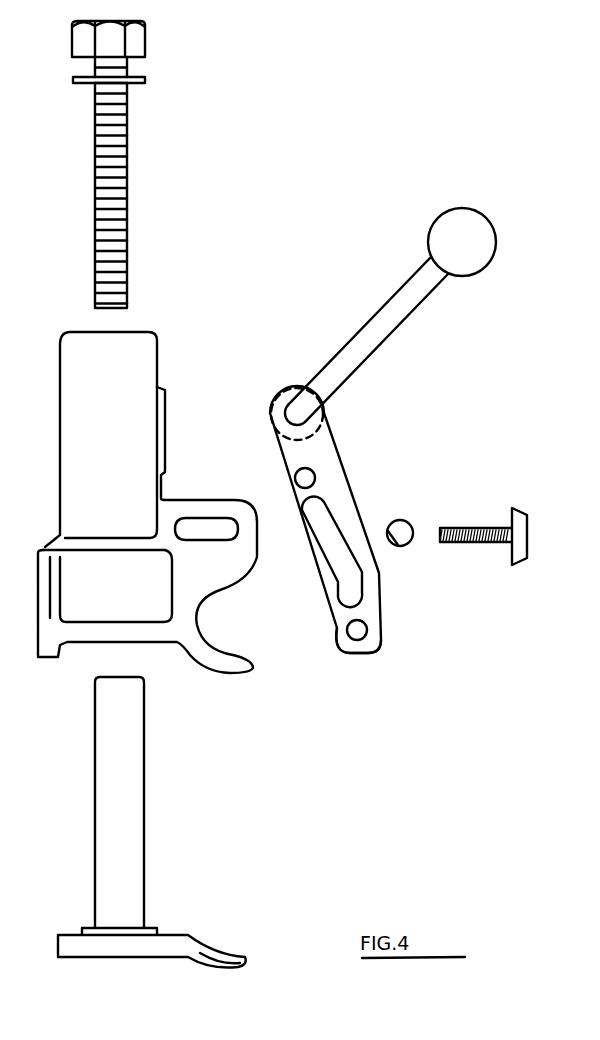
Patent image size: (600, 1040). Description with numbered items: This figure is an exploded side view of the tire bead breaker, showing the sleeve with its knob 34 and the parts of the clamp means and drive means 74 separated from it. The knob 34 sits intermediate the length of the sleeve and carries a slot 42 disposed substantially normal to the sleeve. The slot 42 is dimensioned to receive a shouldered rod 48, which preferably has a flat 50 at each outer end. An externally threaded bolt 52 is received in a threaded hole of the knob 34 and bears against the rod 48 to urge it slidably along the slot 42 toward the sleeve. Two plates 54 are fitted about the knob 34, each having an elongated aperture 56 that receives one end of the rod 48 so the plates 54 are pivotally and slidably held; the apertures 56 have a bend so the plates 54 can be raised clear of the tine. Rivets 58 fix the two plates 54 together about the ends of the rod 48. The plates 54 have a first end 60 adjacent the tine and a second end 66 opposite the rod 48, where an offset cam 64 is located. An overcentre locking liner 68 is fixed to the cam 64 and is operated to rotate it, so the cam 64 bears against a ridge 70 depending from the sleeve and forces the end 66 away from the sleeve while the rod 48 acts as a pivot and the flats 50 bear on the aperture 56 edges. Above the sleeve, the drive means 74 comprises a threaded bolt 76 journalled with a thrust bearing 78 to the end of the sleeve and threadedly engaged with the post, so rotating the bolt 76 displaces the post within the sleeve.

The knob 34 is at (192, 510).
The slot 42 is at (217, 538).
The shouldered rod 48 is at (402, 518).
The flat 50 is at (392, 547).
The externally threaded bolt 52 is at (523, 510).
The plate 54 is at (362, 466).
The elongated aperture 56 is at (333, 552).
The rivet 58 is at (305, 478).
The first end 60 is at (370, 656).
The offset cam 64 is at (322, 413).
The second end 66 is at (302, 393).
The overcentre locking liner 68 is at (398, 318).
The ridge 70 is at (167, 438).
The drive means 74 is at (118, 20).
The threaded bolt 76 is at (97, 115).
The thrust bearing 78 is at (157, 78).